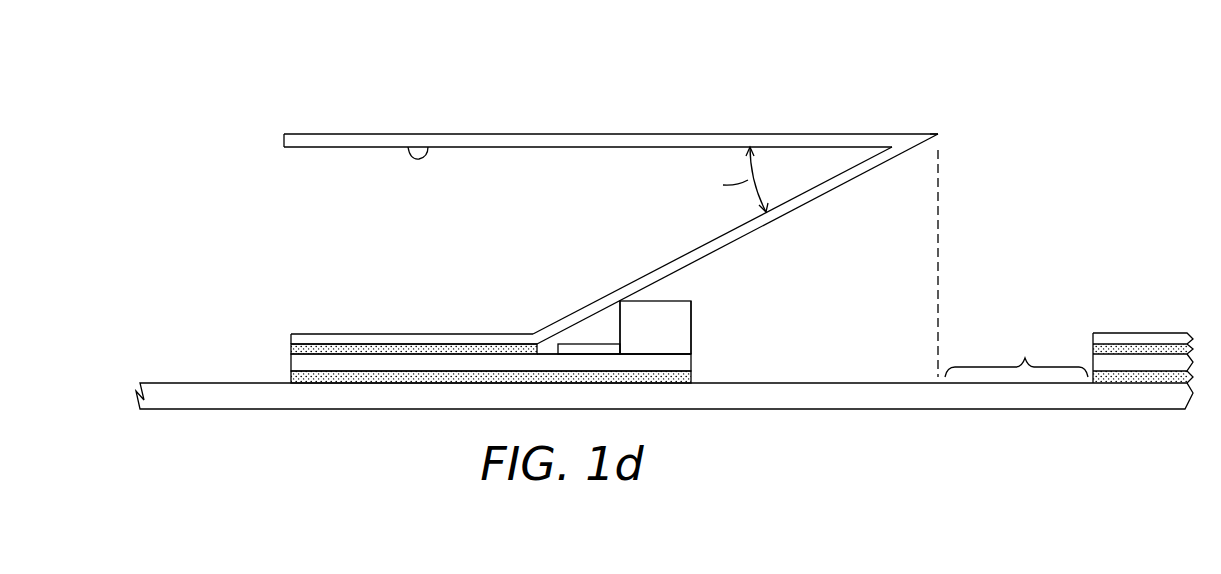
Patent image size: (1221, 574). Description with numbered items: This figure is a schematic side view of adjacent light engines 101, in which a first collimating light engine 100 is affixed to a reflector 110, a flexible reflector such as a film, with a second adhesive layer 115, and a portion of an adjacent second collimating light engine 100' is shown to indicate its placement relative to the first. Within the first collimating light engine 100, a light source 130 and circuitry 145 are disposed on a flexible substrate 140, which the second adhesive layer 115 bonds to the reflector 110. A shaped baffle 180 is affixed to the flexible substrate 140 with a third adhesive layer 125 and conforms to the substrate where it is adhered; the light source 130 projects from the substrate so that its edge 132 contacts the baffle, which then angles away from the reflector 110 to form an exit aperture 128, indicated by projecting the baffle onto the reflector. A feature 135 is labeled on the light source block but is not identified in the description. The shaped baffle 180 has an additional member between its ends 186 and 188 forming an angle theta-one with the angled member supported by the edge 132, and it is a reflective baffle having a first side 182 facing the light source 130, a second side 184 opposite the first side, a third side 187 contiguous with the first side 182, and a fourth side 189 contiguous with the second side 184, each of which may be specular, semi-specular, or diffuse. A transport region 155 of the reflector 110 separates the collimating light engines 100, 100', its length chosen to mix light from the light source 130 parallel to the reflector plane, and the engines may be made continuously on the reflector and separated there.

The adjacent light engines 101 is at (208, 83).
The collimating light engine 100 is at (607, 222).
The second collimating light engine 100' is at (1143, 323).
The reflector 110 is at (179, 403).
The second adhesive layer 115 is at (291, 380).
The third adhesive layer 125 is at (328, 350).
The exit aperture 128 is at (940, 203).
The light source 130 is at (667, 308).
The edge 132 is at (621, 300).
The anchor side 135 is at (692, 325).
The flexible substrate 140 is at (291, 365).
The circuitry 145 is at (588, 345).
The transport region 155 is at (1016, 355).
The shaped baffle 180 is at (384, 338).
The first side 182 is at (867, 171).
The second side 184 is at (814, 187).
The end 186 is at (938, 134).
The third side 187 is at (530, 133).
The end 188 is at (284, 137).
The fourth side 189 is at (428, 146).